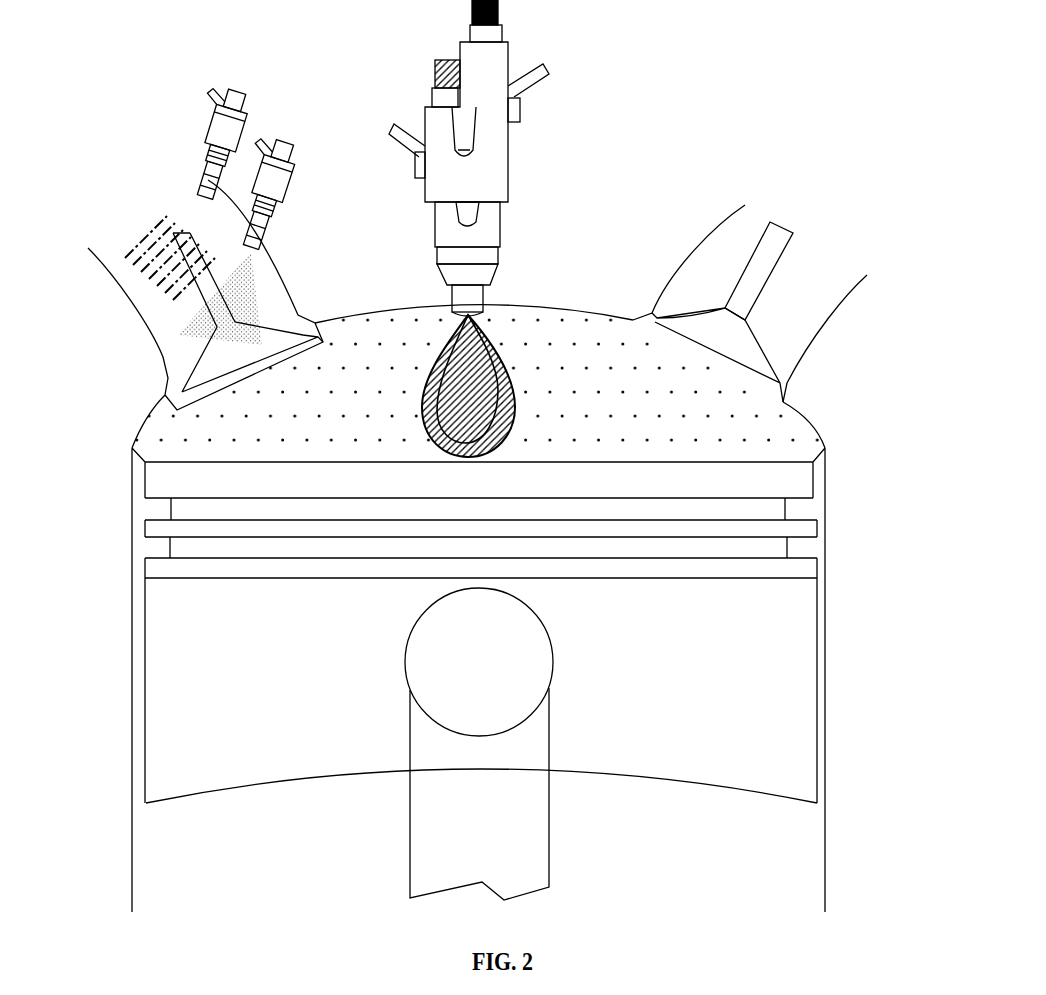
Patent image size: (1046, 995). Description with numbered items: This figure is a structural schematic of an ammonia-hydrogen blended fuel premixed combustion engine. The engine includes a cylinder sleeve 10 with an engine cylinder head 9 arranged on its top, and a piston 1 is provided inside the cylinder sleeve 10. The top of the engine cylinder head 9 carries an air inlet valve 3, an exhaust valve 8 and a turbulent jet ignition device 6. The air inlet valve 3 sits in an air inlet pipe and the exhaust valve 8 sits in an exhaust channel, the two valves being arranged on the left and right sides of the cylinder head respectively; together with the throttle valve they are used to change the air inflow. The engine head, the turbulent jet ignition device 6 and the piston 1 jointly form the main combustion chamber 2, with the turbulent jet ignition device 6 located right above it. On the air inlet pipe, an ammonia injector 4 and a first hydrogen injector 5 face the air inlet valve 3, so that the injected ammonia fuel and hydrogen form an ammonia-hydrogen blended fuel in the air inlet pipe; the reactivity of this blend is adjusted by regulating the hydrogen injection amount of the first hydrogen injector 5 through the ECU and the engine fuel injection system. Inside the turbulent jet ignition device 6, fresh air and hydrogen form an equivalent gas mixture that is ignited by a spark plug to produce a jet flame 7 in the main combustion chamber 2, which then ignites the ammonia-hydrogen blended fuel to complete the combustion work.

The piston 1 is at (197, 630).
The main combustion chamber 2 is at (185, 443).
The air inlet valve 3 is at (213, 388).
The ammonia injector 4 is at (225, 138).
The first hydrogen injector 5 is at (282, 150).
The turbulent jet ignition device 6 is at (488, 175).
The jet flame 7 is at (487, 330).
The exhaust valve 8 is at (742, 345).
The engine cylinder head 9 is at (808, 418).
The cylinder sleeve 10 is at (825, 560).